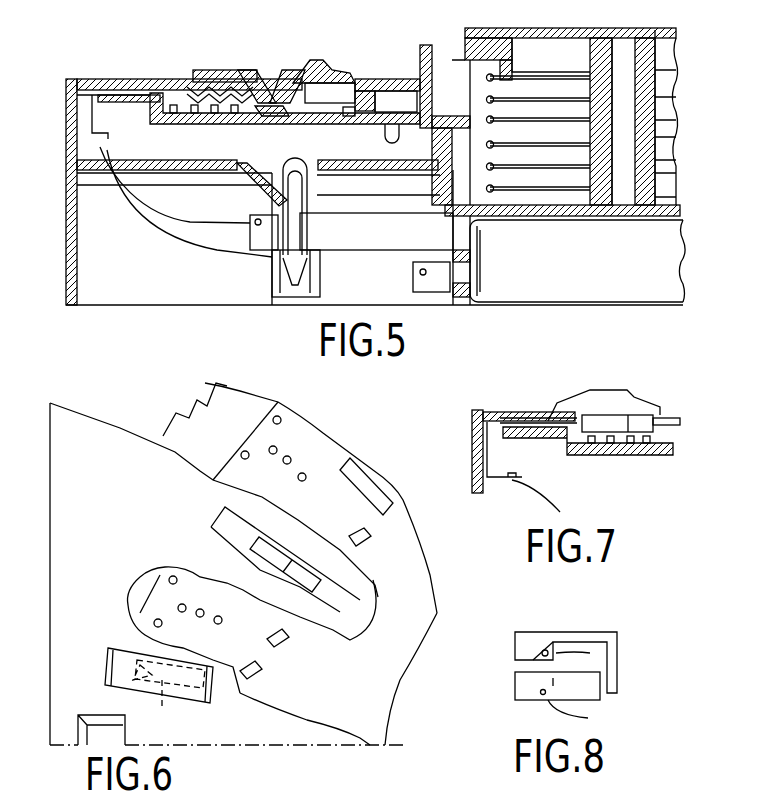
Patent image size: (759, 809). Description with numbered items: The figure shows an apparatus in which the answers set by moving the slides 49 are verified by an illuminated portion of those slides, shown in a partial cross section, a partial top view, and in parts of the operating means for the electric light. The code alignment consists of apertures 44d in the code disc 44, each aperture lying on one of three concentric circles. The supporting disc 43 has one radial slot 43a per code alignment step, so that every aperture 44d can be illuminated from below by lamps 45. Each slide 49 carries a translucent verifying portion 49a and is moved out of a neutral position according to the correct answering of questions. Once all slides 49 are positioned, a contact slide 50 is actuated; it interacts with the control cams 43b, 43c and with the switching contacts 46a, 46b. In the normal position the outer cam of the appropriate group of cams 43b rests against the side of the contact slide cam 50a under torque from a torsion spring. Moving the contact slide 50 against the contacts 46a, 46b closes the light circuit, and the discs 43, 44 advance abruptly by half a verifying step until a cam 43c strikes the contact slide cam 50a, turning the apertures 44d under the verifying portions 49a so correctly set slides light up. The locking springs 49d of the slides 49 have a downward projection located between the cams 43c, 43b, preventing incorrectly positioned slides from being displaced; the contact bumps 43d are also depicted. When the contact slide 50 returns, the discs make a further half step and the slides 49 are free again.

In FIG. 5, the supporting disc 43 is at (547, 30).
In FIG. 6, the supporting disc 43 is at (378, 473).
In FIG. 5, the radial slot 43a is at (303, 120).
In FIG. 6, the radial slot 43a is at (387, 503).
In FIG. 6, the control cams 43b is at (303, 476).
In FIG. 7, the control cams 43b is at (645, 456).
In FIG. 5, the control cams 43c is at (172, 114).
In FIG. 6, the control cams 43c is at (281, 421).
In FIG. 7, the control cams 43c is at (593, 445).
In FIG. 5, the contact bumps 43d is at (197, 114).
In FIG. 5, the code disc 44 is at (375, 96).
In FIG. 6, the code disc 44 is at (383, 703).
In FIG. 7, the code disc 44 is at (523, 451).
In FIG. 5, the apertures 44d is at (277, 112).
In FIG. 6, the apertures 44d is at (365, 540).
In FIG. 5, the lamps 45 is at (265, 194).
In FIG. 5, the switching contact 46a is at (91, 100).
In FIG. 7, the switching contact 46a is at (520, 411).
In FIG. 8, the switching contact 46a is at (600, 700).
In FIG. 5, the switching contact 46b is at (120, 84).
In FIG. 7, the switching contact 46b is at (520, 421).
In FIG. 8, the switching contact 46b is at (617, 670).
In FIG. 5, the slides 49 is at (320, 60).
In FIG. 6, the slides 49 is at (222, 511).
In FIG. 5, the verifying portion 49a is at (280, 97).
In FIG. 6, the verifying portion 49a is at (260, 571).
In FIG. 5, the locking springs 49d is at (200, 88).
In FIG. 6, the contact slide 50 is at (123, 652).
In FIG. 7, the contact slide 50 is at (613, 400).
In FIG. 6, the contact slide cam 50a is at (112, 687).
In FIG. 7, the contact slide cam 50a is at (572, 456).